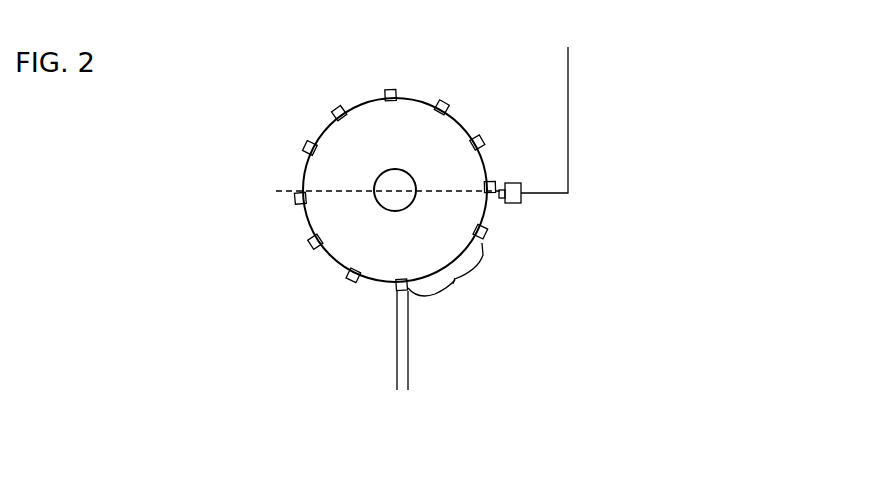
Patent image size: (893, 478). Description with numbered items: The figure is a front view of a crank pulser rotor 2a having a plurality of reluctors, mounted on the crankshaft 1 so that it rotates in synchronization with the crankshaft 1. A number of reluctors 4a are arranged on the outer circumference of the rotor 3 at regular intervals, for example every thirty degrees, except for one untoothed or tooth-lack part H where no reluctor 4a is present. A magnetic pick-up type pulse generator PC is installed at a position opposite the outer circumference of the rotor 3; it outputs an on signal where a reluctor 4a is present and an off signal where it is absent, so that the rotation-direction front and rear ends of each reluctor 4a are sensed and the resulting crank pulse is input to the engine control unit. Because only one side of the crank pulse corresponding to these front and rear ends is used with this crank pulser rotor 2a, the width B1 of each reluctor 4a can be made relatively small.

The crankshaft 1 is at (387, 198).
The rotor 3 is at (318, 214).
The crank pulser rotor 2a is at (325, 125).
The reluctor 4a is at (293, 203).
The pulse generator PC is at (513, 178).
The untoothed part H is at (458, 290).
The width of the reluctor B1 is at (435, 367).